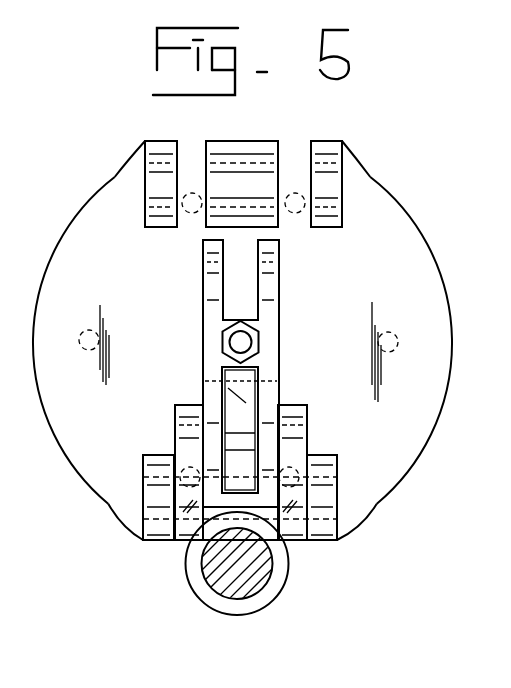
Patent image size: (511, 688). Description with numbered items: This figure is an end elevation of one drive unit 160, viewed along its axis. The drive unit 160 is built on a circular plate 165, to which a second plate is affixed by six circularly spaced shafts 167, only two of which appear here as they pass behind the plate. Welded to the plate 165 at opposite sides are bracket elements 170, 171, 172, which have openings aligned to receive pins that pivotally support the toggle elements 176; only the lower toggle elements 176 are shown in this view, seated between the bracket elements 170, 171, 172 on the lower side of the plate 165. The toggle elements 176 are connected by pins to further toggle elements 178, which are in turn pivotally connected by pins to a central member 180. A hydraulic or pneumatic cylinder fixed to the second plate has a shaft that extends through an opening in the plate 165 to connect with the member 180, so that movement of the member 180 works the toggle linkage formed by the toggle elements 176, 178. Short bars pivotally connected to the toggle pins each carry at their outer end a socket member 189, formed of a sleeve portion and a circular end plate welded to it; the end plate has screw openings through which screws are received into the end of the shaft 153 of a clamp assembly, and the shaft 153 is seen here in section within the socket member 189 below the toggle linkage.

The drive unit 160 is at (349, 566).
The plate 165 is at (163, 300).
The shafts 167 is at (186, 467).
The bracket element 170 is at (147, 182).
The bracket element 171 is at (283, 148).
The bracket element 172 is at (340, 188).
The toggle elements 176 is at (145, 470).
The toggle elements 178 is at (253, 408).
The member 180 is at (280, 347).
The socket member 189 is at (262, 606).
The shaft 153 is at (233, 597).